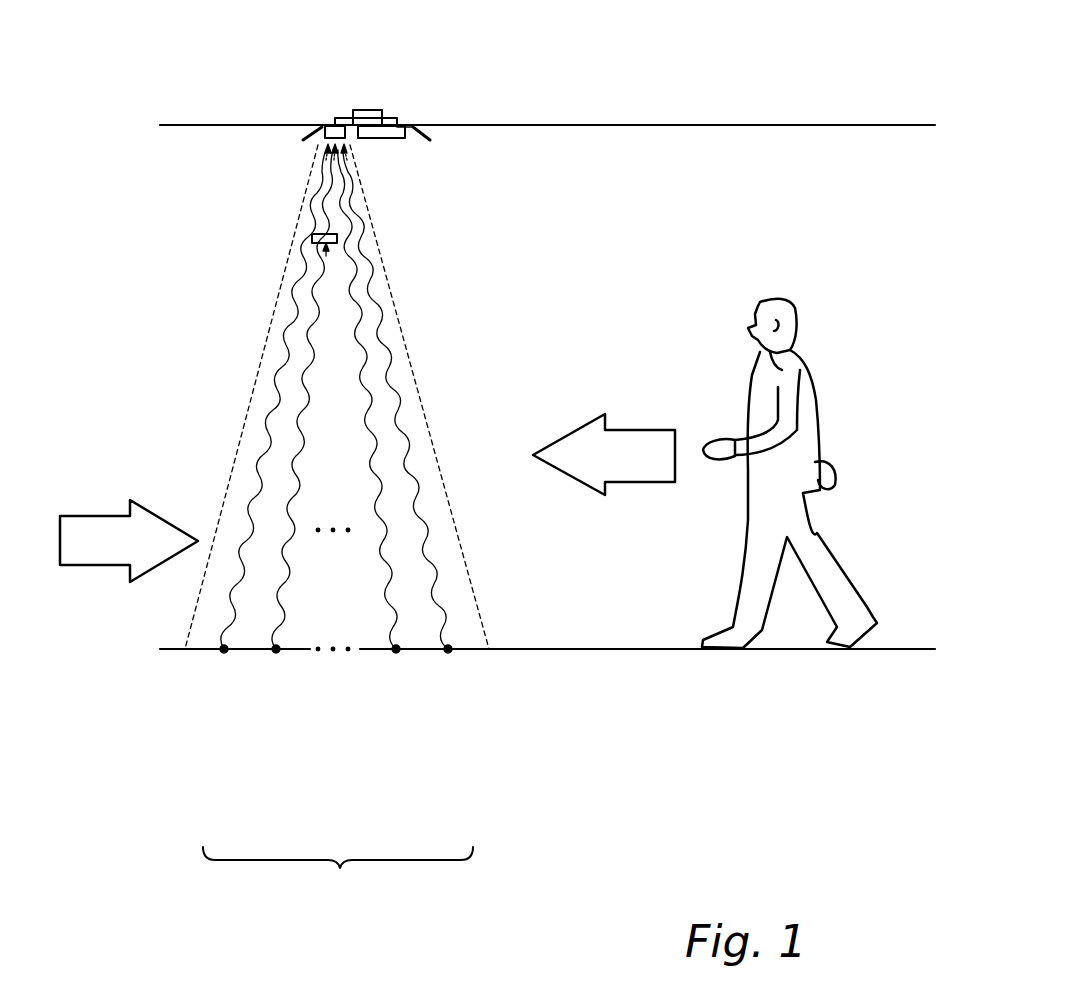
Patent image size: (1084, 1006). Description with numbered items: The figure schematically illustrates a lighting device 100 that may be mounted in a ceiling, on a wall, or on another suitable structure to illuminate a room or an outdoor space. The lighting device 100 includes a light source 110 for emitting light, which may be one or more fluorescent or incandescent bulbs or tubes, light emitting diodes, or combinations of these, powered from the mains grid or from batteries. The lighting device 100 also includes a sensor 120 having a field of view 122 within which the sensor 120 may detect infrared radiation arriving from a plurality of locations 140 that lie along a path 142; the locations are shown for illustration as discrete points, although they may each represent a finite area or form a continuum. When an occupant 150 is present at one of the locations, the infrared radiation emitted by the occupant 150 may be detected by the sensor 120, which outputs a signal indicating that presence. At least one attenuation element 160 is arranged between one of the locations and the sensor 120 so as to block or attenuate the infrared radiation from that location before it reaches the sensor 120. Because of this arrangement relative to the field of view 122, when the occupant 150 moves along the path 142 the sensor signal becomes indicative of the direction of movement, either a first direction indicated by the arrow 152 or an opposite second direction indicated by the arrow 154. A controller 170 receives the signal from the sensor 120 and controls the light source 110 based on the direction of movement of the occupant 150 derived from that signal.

The lighting device 100 is at (426, 128).
The light source 110 is at (399, 128).
The sensor 120 is at (330, 127).
The field of view 122 is at (305, 208).
The plurality of locations 140 is at (338, 877).
The path 142 is at (200, 650).
The occupant 150 is at (793, 370).
The arrow 152 is at (97, 566).
The arrow 154 is at (643, 430).
The attenuation element 160 is at (337, 238).
The controller 170 is at (368, 118).